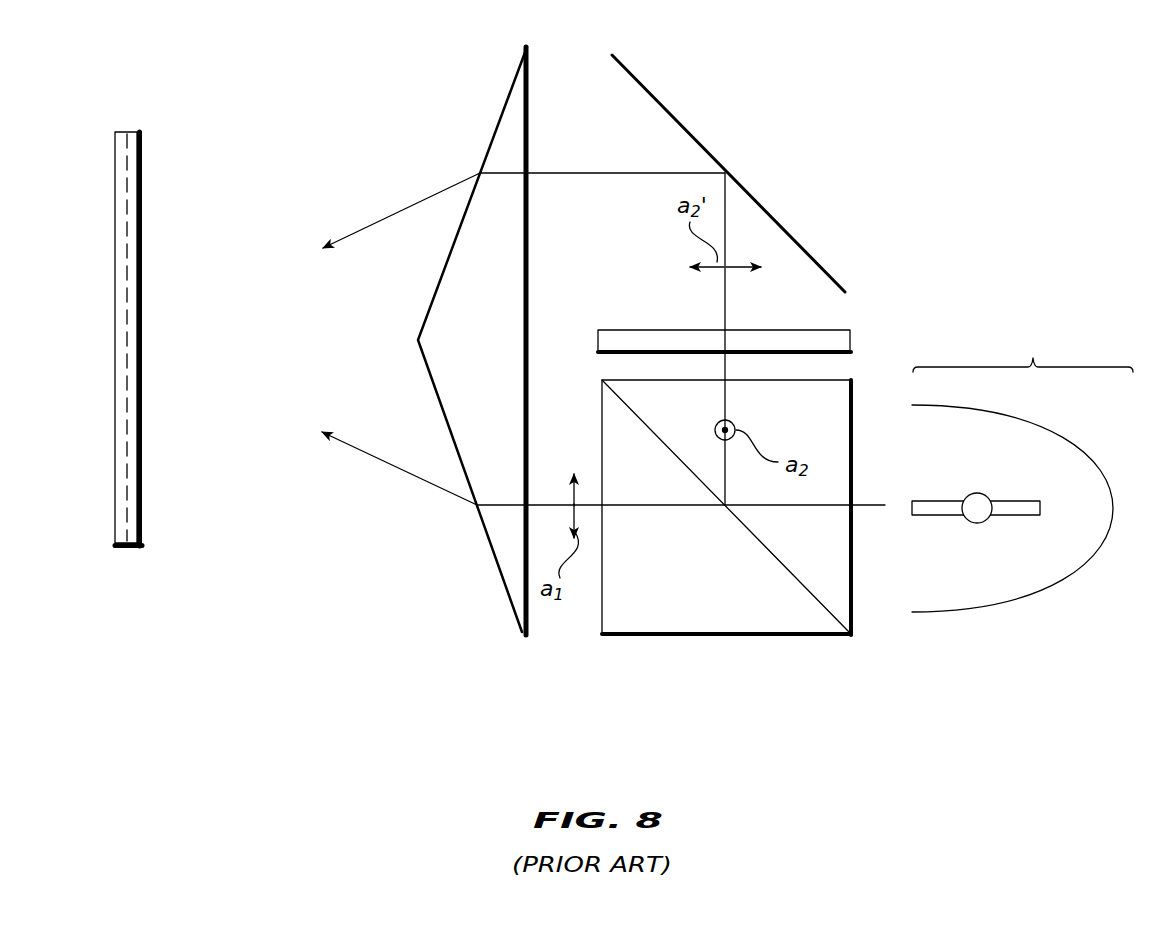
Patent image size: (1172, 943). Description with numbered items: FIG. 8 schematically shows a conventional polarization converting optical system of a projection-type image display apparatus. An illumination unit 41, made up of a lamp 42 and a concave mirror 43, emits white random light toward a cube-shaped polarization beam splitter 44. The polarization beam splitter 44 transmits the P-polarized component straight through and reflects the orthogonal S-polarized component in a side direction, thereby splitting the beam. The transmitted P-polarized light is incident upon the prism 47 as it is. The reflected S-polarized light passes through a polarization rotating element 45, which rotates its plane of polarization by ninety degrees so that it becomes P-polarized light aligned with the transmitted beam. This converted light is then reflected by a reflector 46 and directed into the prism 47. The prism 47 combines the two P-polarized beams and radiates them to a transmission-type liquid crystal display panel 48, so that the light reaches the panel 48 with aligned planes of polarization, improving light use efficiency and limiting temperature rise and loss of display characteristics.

The illumination unit 41 is at (1033, 358).
The lamp 42 is at (1015, 515).
The concave mirror 43 is at (1075, 563).
The polarization beam splitter 44 is at (727, 637).
The polarization rotating element 45 is at (853, 338).
The reflector 46 is at (790, 238).
The prism 47 is at (497, 122).
The transmission-type liquid crystal display panel 48 is at (143, 183).